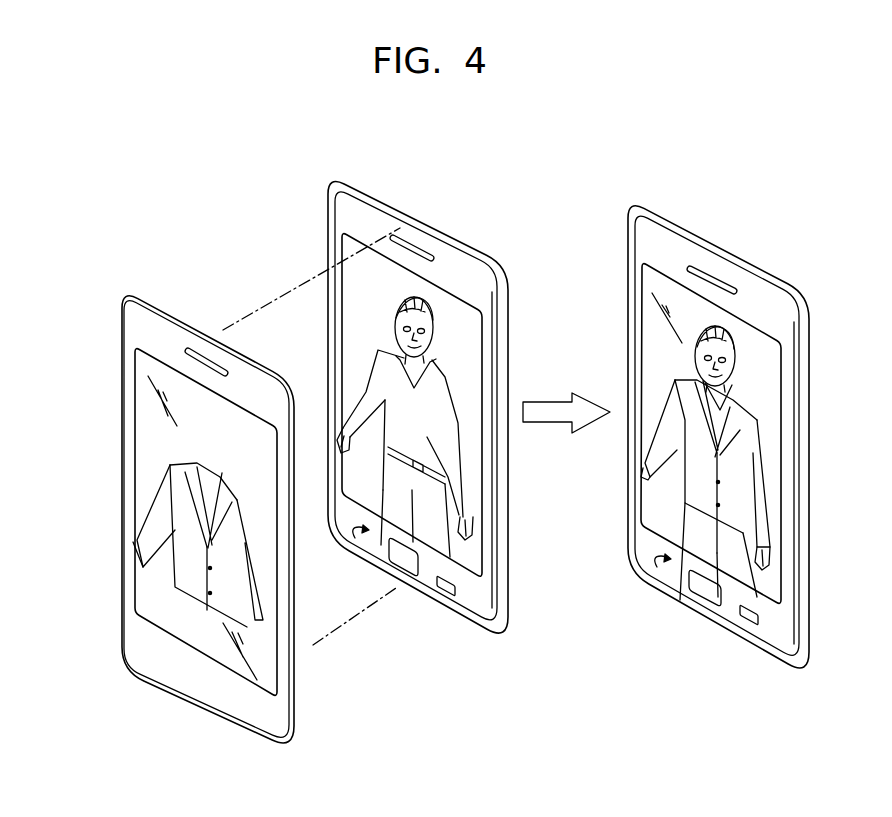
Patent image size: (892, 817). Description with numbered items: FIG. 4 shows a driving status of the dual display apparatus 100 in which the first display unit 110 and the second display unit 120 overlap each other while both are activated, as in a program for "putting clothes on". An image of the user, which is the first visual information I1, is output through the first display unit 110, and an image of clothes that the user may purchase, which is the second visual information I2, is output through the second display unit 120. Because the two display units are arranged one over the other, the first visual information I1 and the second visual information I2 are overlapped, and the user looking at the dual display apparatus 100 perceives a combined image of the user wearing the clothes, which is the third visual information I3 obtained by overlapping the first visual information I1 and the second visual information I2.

The dual display apparatus 100 is at (713, 222).
The first display unit 110 is at (360, 285).
The second display unit 120 is at (148, 417).
The first visual information I1 is at (447, 473).
The second visual information I2 is at (190, 595).
The third visual information I3 is at (451, 521).